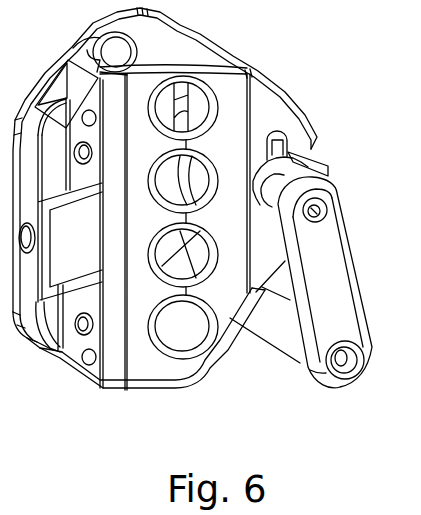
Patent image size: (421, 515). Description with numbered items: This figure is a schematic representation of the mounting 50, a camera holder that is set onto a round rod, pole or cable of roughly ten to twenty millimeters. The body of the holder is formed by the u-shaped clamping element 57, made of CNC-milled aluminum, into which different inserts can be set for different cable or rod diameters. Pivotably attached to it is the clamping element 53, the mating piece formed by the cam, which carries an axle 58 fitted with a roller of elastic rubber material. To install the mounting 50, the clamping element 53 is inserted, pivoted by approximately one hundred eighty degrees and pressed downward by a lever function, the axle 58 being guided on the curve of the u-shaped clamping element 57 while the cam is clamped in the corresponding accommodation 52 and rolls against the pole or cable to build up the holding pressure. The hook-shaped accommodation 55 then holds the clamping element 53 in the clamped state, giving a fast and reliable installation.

The mounting 50 is at (218, 360).
The accommodation 52 is at (310, 158).
The clamping element 53 is at (333, 267).
The hook-shaped accommodation 55 is at (278, 140).
The u-shaped clamping element 57 is at (267, 170).
The axle 58 is at (273, 193).